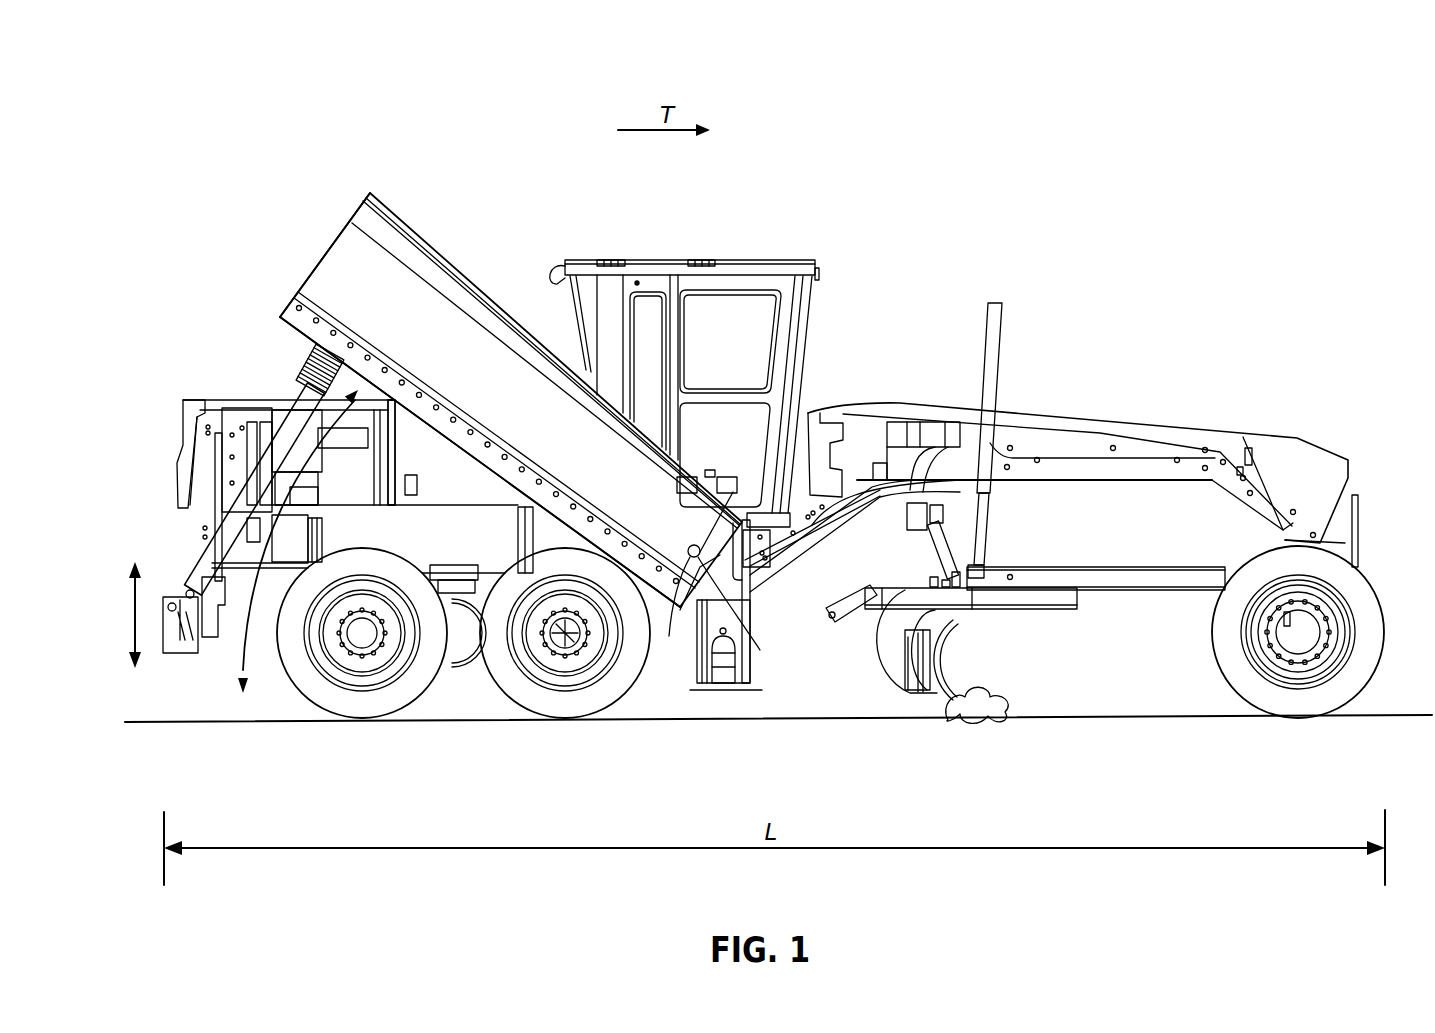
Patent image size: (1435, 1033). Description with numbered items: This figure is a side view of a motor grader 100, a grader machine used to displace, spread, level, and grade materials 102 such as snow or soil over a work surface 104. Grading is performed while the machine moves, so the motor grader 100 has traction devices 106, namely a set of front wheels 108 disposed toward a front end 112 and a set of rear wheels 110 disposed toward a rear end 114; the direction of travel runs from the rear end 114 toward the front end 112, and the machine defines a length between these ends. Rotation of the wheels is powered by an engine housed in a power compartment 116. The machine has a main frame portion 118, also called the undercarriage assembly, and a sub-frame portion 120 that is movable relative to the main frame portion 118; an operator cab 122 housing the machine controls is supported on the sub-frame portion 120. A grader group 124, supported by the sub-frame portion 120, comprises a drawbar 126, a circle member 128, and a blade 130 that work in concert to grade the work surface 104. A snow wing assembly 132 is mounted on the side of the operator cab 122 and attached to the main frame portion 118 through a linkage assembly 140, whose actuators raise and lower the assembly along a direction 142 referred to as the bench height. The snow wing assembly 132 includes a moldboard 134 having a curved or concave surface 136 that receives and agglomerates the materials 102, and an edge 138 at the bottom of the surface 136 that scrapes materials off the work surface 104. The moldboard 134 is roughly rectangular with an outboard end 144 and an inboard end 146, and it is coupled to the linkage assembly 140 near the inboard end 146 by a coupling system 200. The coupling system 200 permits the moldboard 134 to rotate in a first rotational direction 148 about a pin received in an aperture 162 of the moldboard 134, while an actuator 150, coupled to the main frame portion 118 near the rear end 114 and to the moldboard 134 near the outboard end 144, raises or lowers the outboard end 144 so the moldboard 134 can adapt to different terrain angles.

The motor grader 100 is at (352, 90).
The materials 102 is at (968, 722).
The work surface 104 is at (189, 723).
The traction devices 106 is at (302, 708).
The set of front wheels 108 is at (1350, 690).
The set of rear wheels 110 is at (412, 708).
The front end 112 is at (1358, 507).
The rear end 114 is at (186, 456).
The power compartment 116 is at (300, 392).
The main frame portion 118 is at (772, 572).
The sub-frame portion 120 is at (1096, 424).
The operator cab 122 is at (632, 238).
The grader group 124 is at (1106, 545).
The drawbar 126 is at (1042, 573).
The circle member 128 is at (1057, 603).
The blade 130 is at (957, 638).
The snow wing assembly 132 is at (467, 392).
The moldboard 134 is at (388, 262).
The surface 136 is at (436, 298).
The edge 138 is at (297, 333).
The linkage assembly 140 is at (782, 607).
The direction 142 is at (133, 568).
The outboard end 144 is at (314, 268).
The inboard end 146 is at (724, 556).
The first rotational direction 148 is at (242, 668).
The actuator 150 is at (290, 405).
The aperture 162 is at (744, 606).
The coupling system 200 is at (705, 611).